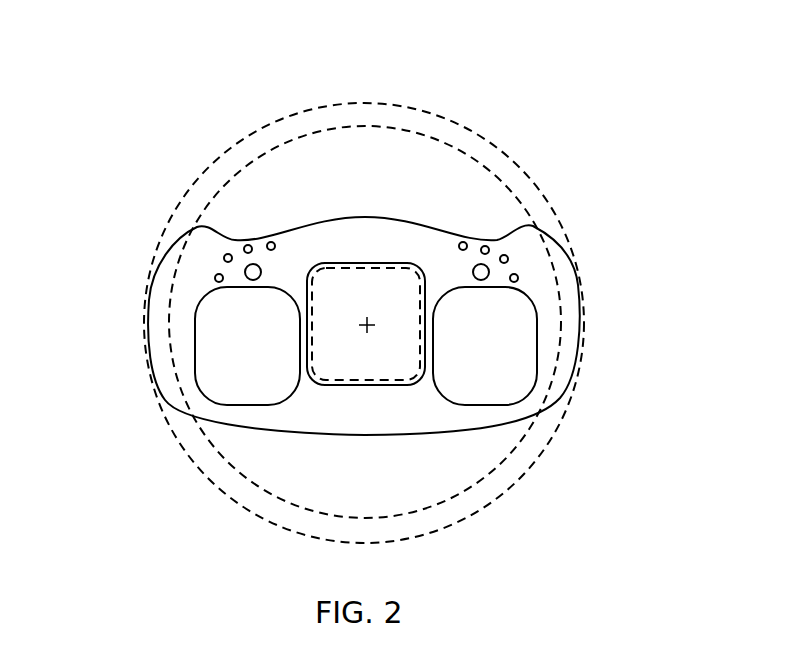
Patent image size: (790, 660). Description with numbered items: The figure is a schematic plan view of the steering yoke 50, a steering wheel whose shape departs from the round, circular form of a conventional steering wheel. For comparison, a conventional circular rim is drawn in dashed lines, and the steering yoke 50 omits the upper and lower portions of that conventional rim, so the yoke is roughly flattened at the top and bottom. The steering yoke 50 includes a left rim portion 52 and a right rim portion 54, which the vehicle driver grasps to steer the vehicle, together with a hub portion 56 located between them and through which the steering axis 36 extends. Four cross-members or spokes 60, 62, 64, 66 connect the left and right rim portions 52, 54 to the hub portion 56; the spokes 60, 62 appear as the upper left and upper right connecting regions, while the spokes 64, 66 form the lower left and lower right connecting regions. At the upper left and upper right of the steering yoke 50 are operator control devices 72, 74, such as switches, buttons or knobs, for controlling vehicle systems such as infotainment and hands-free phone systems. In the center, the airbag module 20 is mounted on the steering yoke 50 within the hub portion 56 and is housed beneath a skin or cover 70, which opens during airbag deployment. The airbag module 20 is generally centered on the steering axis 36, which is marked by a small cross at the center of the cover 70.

The steering yoke 50 is at (126, 156).
The left rim portion 52 is at (162, 320).
The right rim portion 54 is at (570, 318).
The hub portion 56 is at (363, 415).
The spoke 60 is at (237, 283).
The spoke 62 is at (492, 283).
The spoke 64 is at (257, 415).
The spoke 66 is at (475, 420).
The cover 70 is at (400, 265).
The airbag module 20 is at (370, 268).
The steering axis 36 is at (365, 325).
The operator control device 72 is at (229, 206).
The operator control device 74 is at (510, 213).